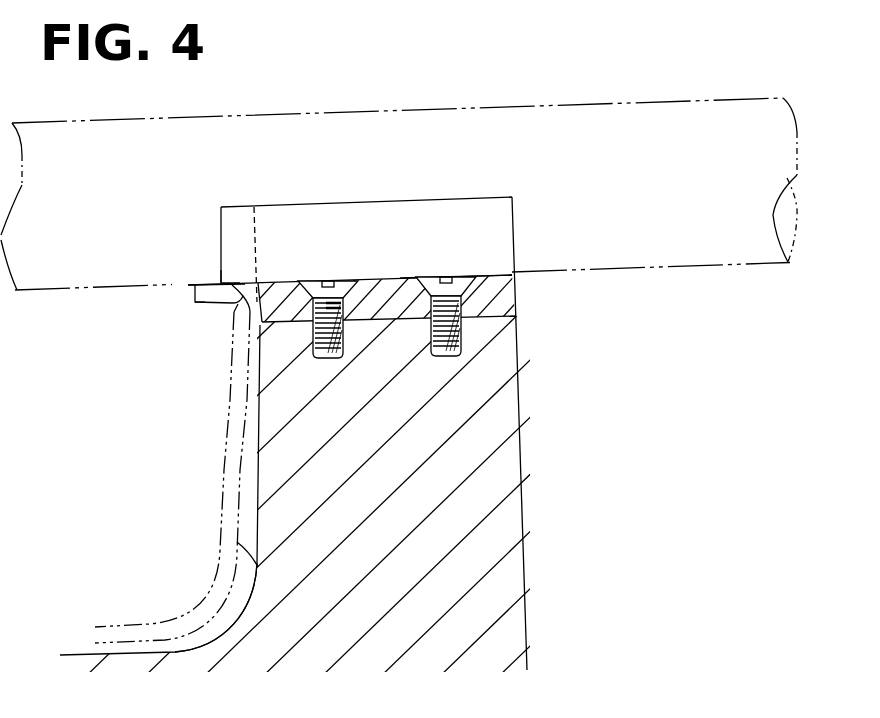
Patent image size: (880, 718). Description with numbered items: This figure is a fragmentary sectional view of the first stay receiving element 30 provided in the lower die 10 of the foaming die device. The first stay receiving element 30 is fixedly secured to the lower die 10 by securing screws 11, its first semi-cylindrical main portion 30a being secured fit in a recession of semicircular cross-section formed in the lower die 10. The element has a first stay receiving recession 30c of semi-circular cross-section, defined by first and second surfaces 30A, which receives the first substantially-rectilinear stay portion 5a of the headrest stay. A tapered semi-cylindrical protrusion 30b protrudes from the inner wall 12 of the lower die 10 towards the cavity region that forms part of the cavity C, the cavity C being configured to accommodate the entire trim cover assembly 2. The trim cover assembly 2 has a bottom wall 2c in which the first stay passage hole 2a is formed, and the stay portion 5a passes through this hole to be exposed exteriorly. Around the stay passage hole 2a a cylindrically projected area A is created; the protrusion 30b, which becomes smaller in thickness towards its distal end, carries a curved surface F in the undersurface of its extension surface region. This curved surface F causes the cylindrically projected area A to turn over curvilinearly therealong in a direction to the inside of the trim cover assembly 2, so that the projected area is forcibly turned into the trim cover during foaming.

The trim cover assembly 2 is at (222, 512).
The first stay passage hole 2a is at (190, 286).
The bottom wall 2c is at (258, 566).
The first substantially-rectilinear stay portion 5a is at (697, 266).
The lower die 10 is at (500, 538).
The securing screws 11 is at (325, 362).
The inner wall 12 is at (250, 490).
The first stay receiving element 30 is at (565, 305).
The first semi-cylindrical main portion 30a is at (378, 280).
The first and second surfaces 30A is at (490, 276).
The semi-cylindrical protrusion 30b is at (235, 281).
The first stay receiving recession 30c is at (328, 228).
The cylindrically projected area A is at (200, 302).
The curved surface F is at (237, 308).
The cavity C is at (52, 505).